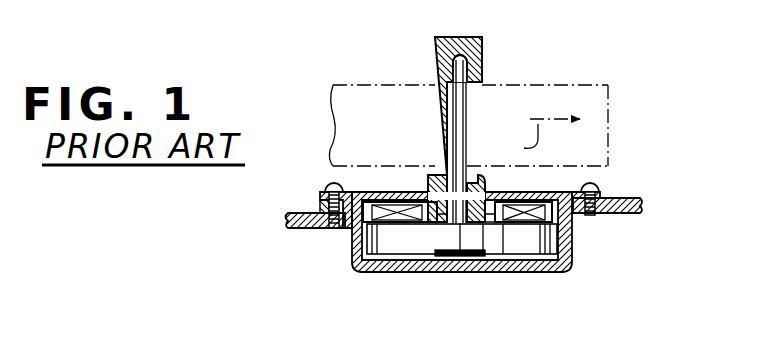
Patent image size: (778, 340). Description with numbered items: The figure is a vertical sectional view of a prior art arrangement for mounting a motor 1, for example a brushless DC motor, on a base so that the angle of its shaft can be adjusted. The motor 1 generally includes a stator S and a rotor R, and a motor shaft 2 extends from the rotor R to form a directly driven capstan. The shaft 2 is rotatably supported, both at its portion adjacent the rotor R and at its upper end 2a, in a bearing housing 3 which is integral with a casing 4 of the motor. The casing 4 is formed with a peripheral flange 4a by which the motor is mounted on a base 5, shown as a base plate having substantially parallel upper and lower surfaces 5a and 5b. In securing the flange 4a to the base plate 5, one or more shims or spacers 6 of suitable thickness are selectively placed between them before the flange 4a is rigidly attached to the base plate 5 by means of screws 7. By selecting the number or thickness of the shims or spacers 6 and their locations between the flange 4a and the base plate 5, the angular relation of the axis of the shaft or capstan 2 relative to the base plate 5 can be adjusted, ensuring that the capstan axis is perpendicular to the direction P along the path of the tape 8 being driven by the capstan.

The motor 1 is at (350, 284).
The motor shaft 2 is at (472, 122).
The upper end of shaft 2a is at (460, 56).
The bearing housing 3 is at (435, 46).
The casing 4 is at (466, 268).
The peripheral flange 4a is at (322, 195).
The base 5 is at (620, 218).
The upper surface 5a is at (638, 200).
The lower surface 5b is at (634, 215).
The shims or spacers 6 is at (320, 211).
The screws 7 is at (333, 184).
The tape 8 is at (556, 84).
The direction along the path of the tape P is at (542, 138).
The rotor R is at (397, 245).
The stator S is at (527, 224).